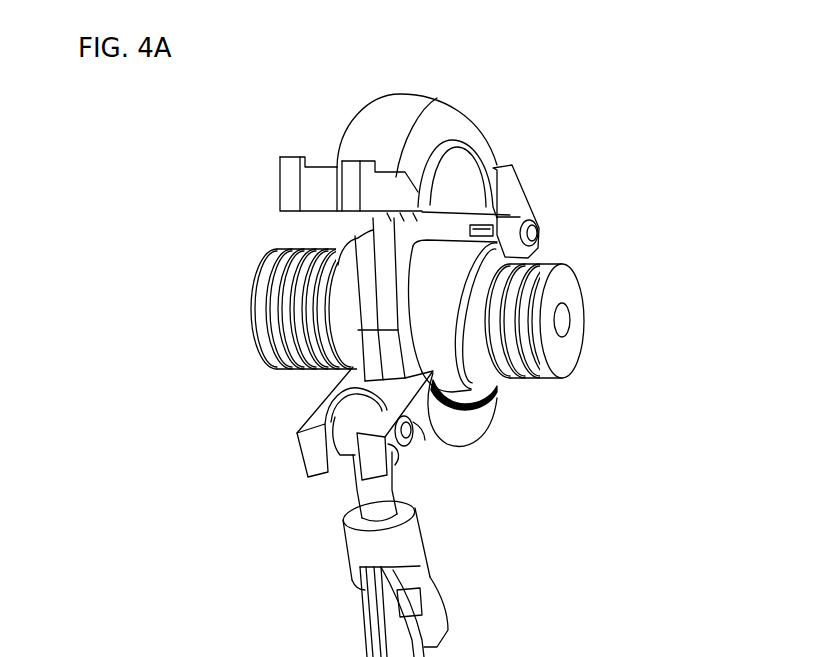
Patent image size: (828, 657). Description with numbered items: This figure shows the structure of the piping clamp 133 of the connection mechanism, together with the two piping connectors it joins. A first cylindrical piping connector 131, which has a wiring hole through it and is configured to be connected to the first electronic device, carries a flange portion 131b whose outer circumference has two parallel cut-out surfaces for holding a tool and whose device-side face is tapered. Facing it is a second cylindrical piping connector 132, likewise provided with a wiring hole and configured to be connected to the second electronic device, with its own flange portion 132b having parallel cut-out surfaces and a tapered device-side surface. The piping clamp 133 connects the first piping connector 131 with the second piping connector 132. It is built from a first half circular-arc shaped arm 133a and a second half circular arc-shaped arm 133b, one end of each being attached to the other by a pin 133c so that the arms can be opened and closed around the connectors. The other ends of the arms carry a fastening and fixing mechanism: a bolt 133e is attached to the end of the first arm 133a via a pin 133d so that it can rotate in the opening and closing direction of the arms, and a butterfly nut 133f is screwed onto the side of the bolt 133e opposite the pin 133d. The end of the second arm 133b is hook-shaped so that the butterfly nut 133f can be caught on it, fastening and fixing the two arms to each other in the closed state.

The first cylindrical piping connector 131 is at (270, 385).
The flange portion 131b is at (377, 252).
The second cylindrical piping connector 132 is at (545, 394).
The flange portion 132b is at (437, 233).
The piping clamp 133 is at (468, 502).
The first half circular-arc shaped arm 133a is at (467, 420).
The second half circular arc-shaped arm 133b is at (450, 122).
The pin 133c is at (540, 233).
The pin 133d is at (413, 438).
The bolt 133e is at (368, 497).
The butterfly nut 133f is at (355, 557).